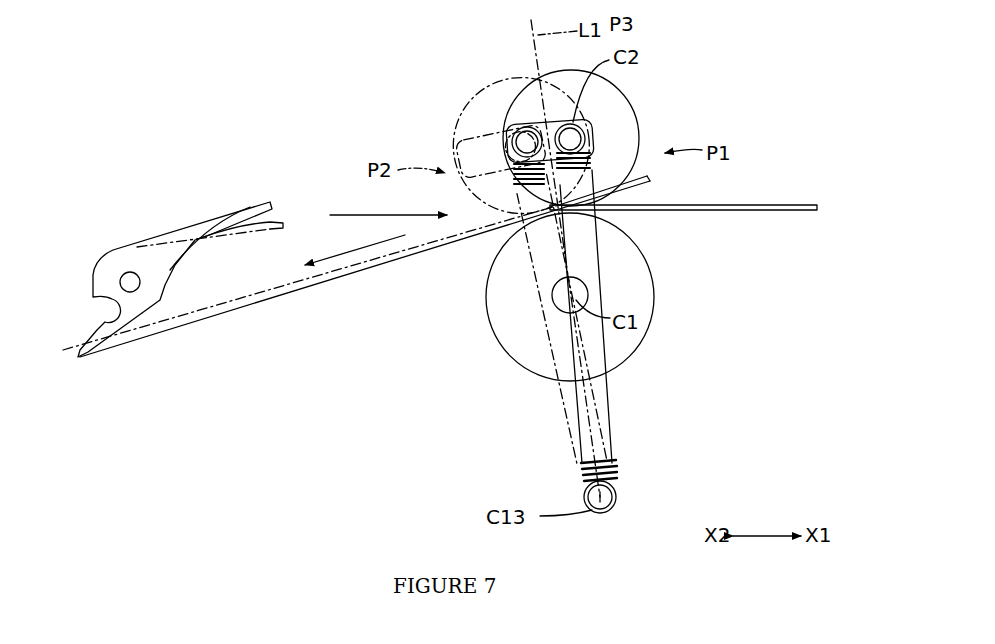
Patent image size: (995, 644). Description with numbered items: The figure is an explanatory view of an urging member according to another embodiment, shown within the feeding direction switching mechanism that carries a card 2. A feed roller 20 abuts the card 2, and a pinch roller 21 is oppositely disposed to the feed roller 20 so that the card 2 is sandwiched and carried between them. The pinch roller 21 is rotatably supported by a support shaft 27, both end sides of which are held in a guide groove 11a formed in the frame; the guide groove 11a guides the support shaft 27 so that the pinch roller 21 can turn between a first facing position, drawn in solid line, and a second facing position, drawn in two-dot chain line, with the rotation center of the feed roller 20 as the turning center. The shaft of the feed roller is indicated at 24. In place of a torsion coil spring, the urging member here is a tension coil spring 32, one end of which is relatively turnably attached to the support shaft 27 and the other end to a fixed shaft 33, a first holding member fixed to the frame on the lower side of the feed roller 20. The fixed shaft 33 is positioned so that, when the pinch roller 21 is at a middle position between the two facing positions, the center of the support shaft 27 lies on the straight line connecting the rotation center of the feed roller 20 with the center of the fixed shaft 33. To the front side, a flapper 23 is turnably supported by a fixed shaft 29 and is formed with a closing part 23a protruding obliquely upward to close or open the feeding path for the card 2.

The card 2 is at (740, 211).
The guide groove 11a is at (537, 124).
The feed roller 20 is at (655, 300).
The pinch roller 21 is at (640, 132).
The flapper 23 is at (172, 268).
The closing part 23a is at (248, 221).
The roller shaft 24 is at (588, 290).
The support shaft 27 is at (587, 121).
The fixed shaft 29 is at (141, 283).
The tension coil spring 32 is at (565, 407).
The fixed shaft 33 is at (618, 497).